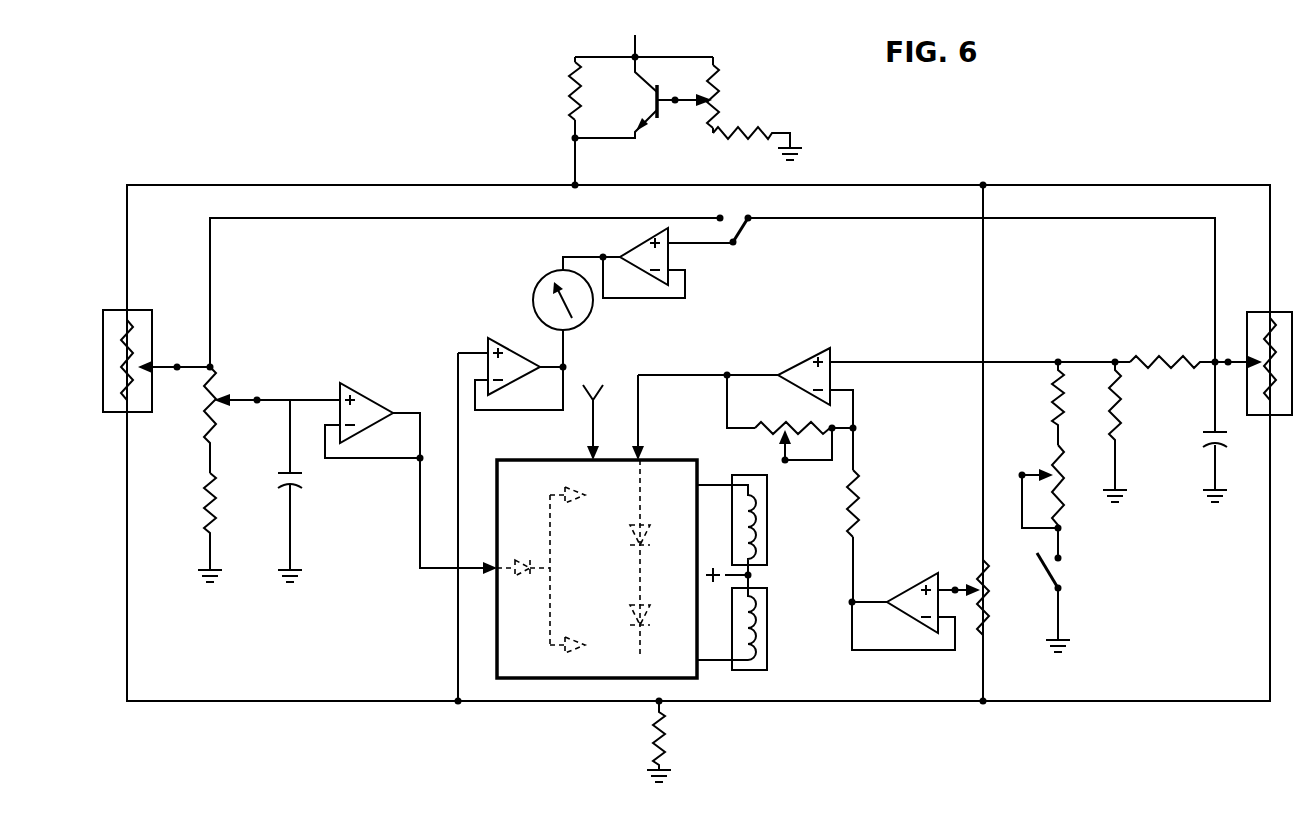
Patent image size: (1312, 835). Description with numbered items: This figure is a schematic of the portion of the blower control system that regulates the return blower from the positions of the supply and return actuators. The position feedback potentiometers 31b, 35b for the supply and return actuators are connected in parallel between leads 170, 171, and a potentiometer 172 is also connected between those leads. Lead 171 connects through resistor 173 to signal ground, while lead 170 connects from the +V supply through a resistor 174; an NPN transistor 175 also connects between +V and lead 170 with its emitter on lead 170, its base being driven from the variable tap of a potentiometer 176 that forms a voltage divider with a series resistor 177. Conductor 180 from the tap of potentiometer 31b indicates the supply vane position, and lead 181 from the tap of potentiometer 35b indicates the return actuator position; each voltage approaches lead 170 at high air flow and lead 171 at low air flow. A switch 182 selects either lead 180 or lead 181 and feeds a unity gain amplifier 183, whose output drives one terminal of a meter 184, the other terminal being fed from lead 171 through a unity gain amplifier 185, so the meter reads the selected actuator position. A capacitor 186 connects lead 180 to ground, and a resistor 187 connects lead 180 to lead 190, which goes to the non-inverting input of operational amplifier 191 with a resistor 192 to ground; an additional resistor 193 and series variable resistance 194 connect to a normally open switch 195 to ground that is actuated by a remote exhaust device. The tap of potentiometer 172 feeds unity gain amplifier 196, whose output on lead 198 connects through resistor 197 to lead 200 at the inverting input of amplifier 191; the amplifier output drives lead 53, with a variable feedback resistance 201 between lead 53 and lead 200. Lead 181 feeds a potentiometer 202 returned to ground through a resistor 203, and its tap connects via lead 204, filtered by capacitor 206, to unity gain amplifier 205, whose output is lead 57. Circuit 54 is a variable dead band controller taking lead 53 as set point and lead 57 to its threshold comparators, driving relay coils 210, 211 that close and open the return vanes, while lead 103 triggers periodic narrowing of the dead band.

The lead 170 is at (226, 185).
The lead 171 is at (458, 356).
The potentiometer 172 is at (992, 600).
The resistor 173 is at (664, 742).
The resistor 174 is at (568, 95).
The NPN transistor 175 is at (667, 122).
The potentiometer 176 is at (718, 86).
The resistor 177 is at (760, 128).
The conductor 180 is at (1213, 358).
The lead 181 is at (214, 366).
The switch 182 is at (750, 236).
The unity gain amplifier 183 is at (620, 253).
The meter 184 is at (540, 280).
The unity gain amplifier 185 is at (505, 345).
The capacitor 186 is at (1210, 430).
The resistor 187 is at (1150, 352).
The lead 190 is at (1003, 362).
The operational amplifier 191 is at (800, 358).
The resistor 192 is at (1120, 412).
The resistor 193 is at (1052, 400).
The variable resistance 194 is at (1060, 500).
The normally opened switch 195 is at (1042, 568).
The unity gain amplifier 196 is at (912, 590).
The resistor 197 is at (862, 505).
The lead 198 is at (853, 565).
The lead 200 is at (853, 413).
The variable feedback resistance 201 is at (780, 428).
The potentiometer 202 is at (205, 416).
The resistor 203 is at (205, 505).
The lead 204 is at (290, 400).
The unity gain amplifier 205 is at (372, 398).
The filtering capacitor 206 is at (284, 474).
The relay coil 210 is at (768, 545).
The relay coil 211 is at (768, 642).
The position feedback potentiometer 35b is at (152, 310).
The position feedback potentiometer 31b is at (1250, 318).
The lead 53 is at (638, 430).
The circuit 54 is at (527, 460).
The lead 57 is at (420, 523).
The lead 103 is at (593, 425).